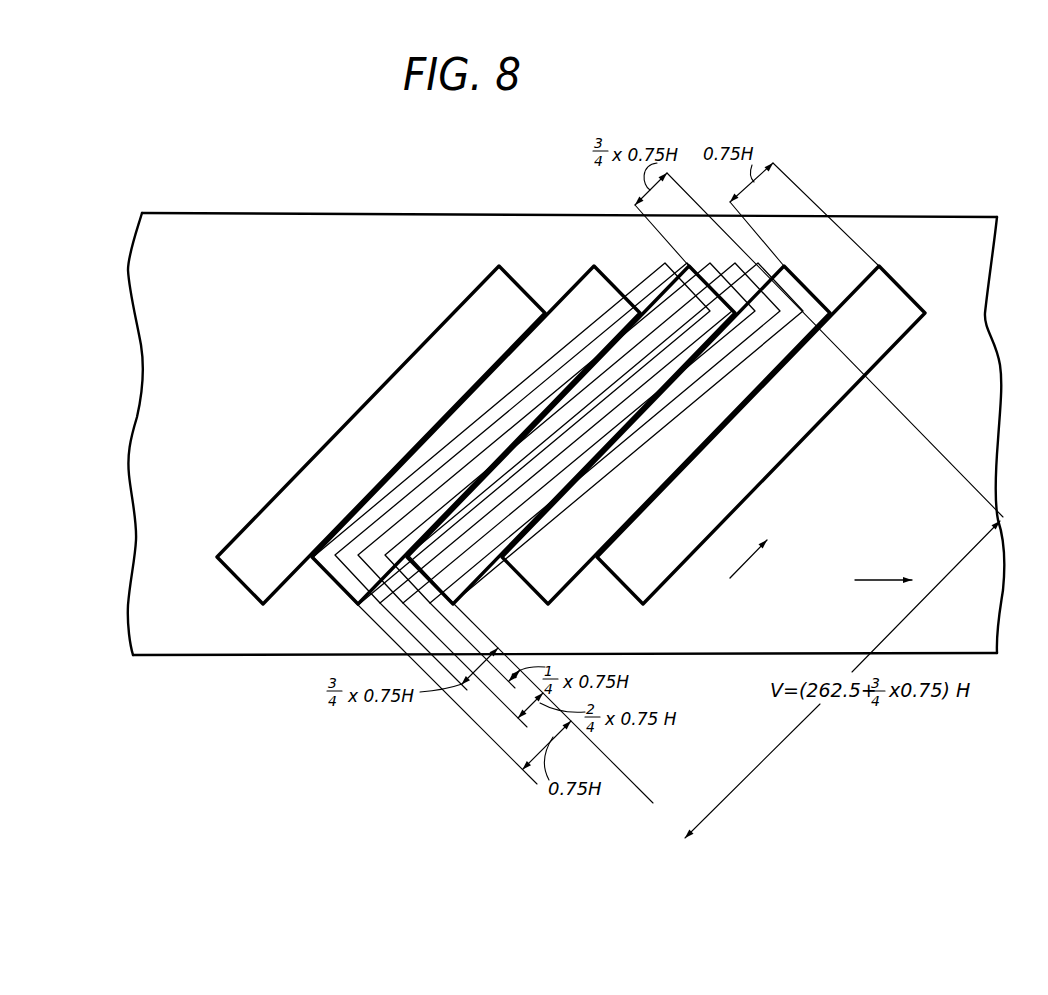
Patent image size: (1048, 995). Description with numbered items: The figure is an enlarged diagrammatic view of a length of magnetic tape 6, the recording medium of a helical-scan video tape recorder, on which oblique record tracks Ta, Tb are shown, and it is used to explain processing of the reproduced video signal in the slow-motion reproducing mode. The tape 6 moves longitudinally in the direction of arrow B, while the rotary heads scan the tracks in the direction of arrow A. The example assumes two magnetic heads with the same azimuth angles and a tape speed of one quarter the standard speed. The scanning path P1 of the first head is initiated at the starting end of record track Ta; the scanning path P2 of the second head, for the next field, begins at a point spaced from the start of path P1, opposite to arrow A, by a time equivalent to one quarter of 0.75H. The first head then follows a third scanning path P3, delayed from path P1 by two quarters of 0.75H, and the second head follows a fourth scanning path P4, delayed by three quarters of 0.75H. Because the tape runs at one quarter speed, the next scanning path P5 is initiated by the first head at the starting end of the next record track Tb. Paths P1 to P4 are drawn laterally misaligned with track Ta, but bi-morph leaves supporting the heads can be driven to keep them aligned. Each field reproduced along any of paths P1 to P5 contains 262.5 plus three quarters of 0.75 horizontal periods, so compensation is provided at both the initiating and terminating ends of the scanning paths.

The magnetic tape 6 is at (300, 228).
The record track Ta is at (521, 285).
The record track Tb is at (606, 279).
The scanning path P1 is at (490, 578).
The scanning path P2 is at (435, 610).
The scanning path P3 is at (413, 607).
The scanning path P4 is at (392, 608).
The scanning path P5 is at (360, 607).
The arrow indicating direction of rotation of the disc A is at (748, 564).
The arrow indicating direction of tape movement B is at (877, 583).